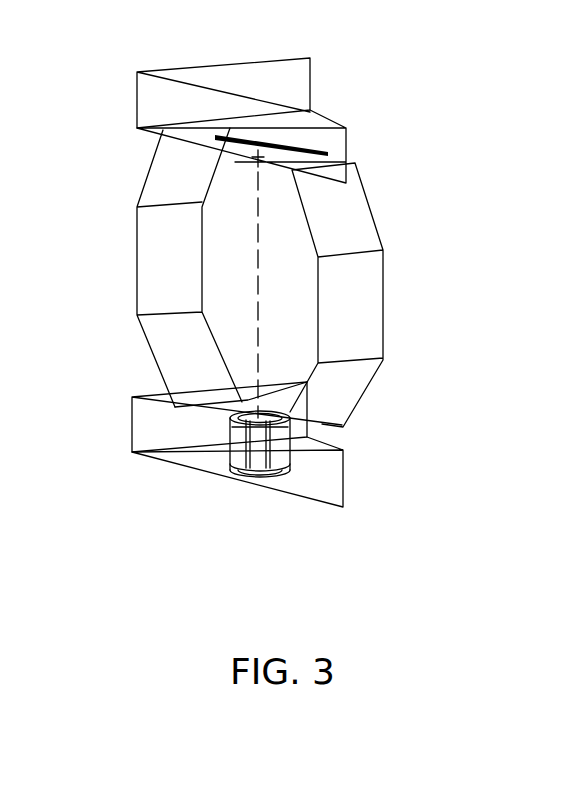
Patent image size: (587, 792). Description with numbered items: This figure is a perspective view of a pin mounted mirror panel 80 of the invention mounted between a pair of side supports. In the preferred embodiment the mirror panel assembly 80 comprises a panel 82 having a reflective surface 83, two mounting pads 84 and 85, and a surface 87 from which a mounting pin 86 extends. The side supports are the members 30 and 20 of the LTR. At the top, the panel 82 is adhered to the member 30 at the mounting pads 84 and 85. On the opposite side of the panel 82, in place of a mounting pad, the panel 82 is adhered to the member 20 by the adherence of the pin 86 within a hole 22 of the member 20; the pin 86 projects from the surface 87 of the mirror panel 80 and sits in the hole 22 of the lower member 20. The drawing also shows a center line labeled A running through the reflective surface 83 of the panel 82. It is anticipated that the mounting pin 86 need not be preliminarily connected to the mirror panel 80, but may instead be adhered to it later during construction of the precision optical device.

The member 20 is at (168, 452).
The hole 22 is at (267, 488).
The member 30 is at (160, 97).
The mirror panel 80 is at (324, 277).
The panel 82 is at (357, 291).
The reflective surface 83 is at (243, 271).
The mounting pad 84 is at (233, 137).
The mounting pad 85 is at (322, 157).
The mounting pin 86 is at (235, 452).
The surface 87 is at (330, 437).
The central axis A is at (253, 300).